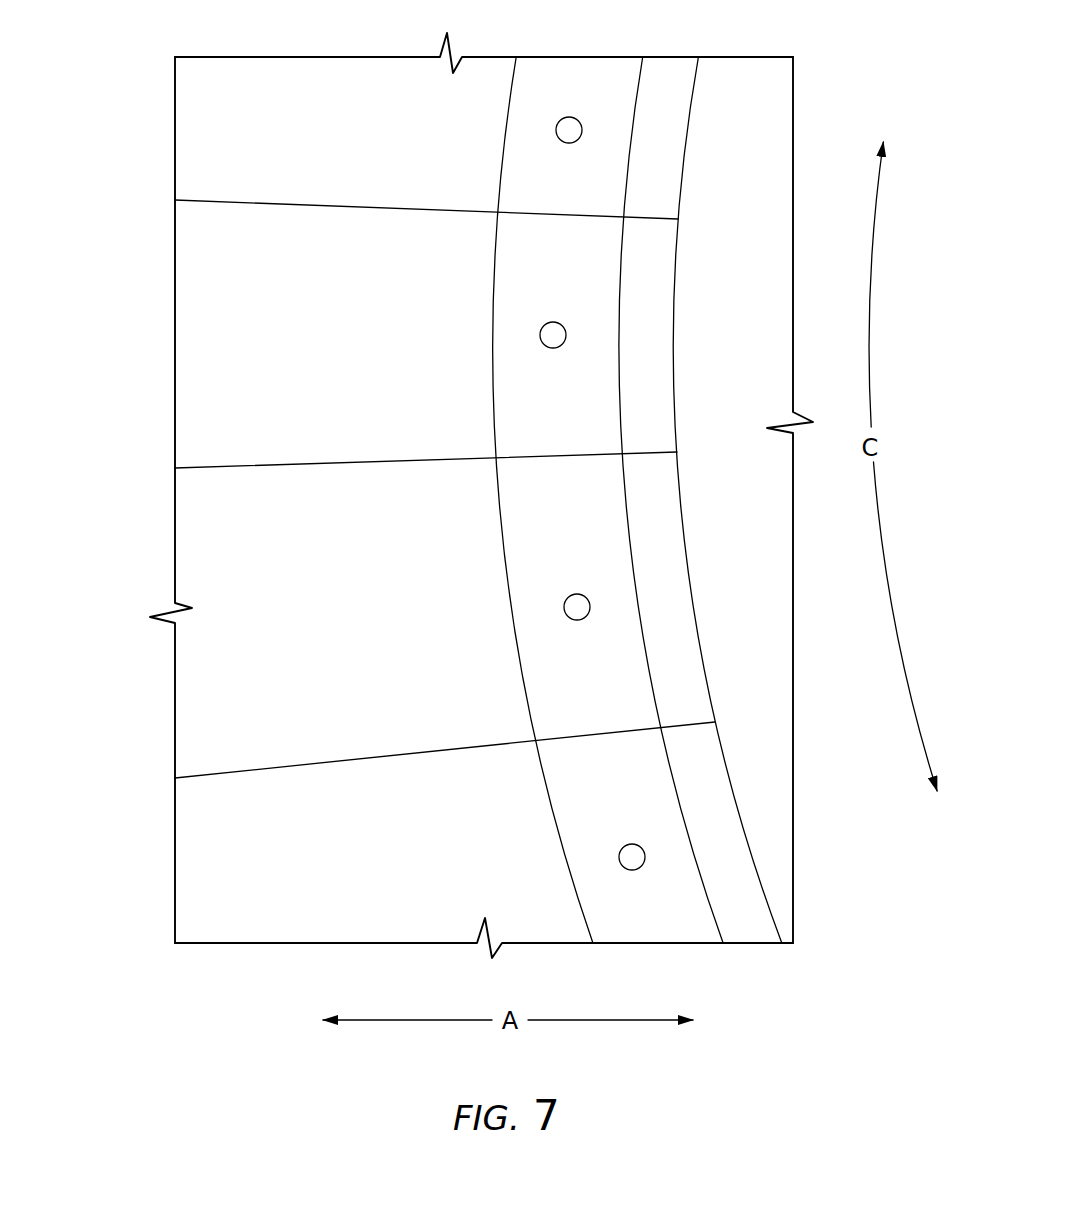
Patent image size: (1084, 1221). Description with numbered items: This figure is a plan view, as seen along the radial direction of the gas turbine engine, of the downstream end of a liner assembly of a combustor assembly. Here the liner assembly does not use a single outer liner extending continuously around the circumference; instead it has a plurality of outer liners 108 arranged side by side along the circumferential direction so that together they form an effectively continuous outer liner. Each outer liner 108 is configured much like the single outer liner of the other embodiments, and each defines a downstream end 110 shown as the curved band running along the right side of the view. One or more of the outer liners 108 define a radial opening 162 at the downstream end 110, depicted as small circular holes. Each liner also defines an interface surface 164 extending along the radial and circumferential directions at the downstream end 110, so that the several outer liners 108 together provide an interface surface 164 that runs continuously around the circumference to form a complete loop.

The outer liner 108 is at (285, 115).
The downstream end 110 is at (658, 143).
The radial opening 162 is at (578, 116).
The interface surface 164 is at (627, 195).